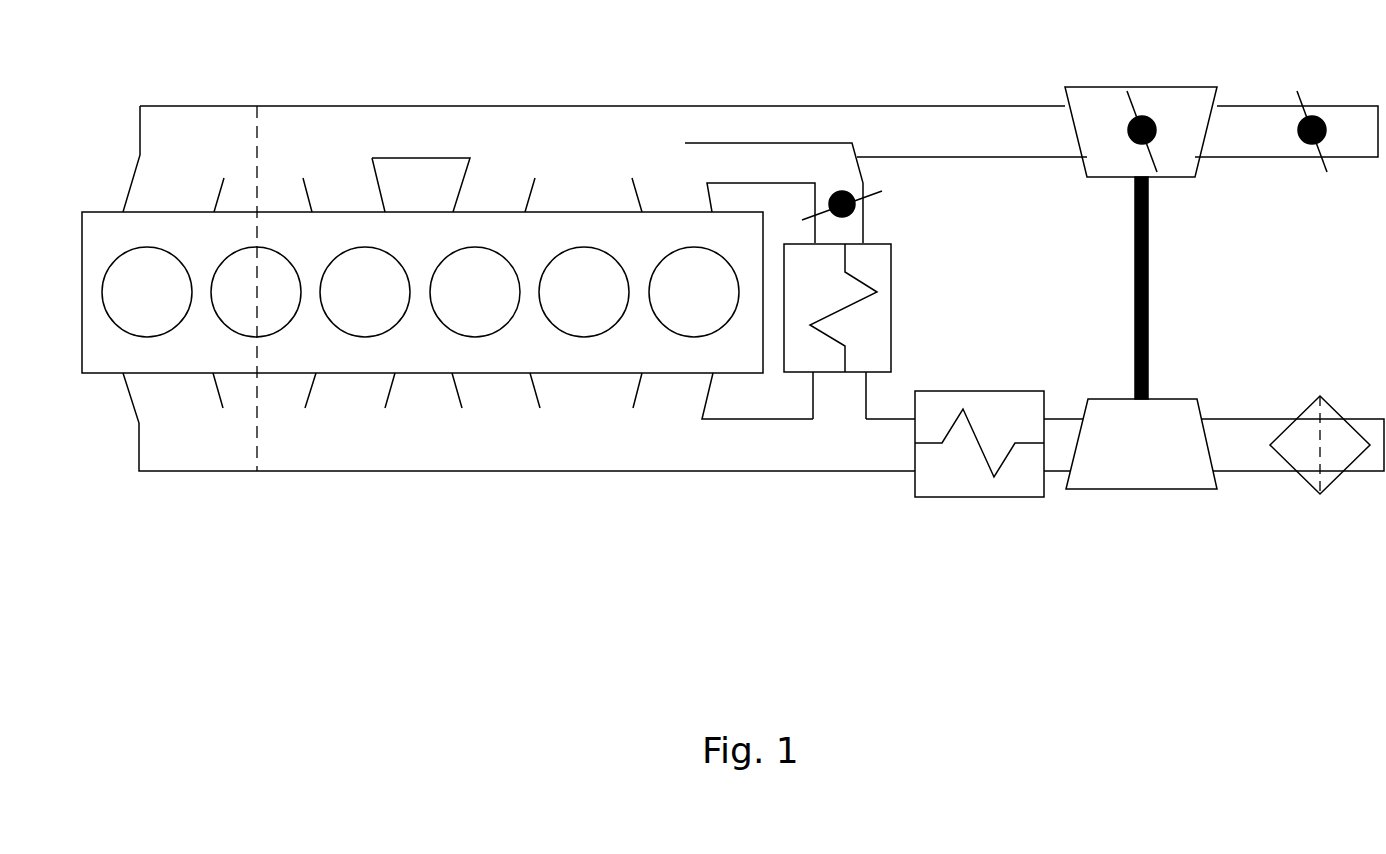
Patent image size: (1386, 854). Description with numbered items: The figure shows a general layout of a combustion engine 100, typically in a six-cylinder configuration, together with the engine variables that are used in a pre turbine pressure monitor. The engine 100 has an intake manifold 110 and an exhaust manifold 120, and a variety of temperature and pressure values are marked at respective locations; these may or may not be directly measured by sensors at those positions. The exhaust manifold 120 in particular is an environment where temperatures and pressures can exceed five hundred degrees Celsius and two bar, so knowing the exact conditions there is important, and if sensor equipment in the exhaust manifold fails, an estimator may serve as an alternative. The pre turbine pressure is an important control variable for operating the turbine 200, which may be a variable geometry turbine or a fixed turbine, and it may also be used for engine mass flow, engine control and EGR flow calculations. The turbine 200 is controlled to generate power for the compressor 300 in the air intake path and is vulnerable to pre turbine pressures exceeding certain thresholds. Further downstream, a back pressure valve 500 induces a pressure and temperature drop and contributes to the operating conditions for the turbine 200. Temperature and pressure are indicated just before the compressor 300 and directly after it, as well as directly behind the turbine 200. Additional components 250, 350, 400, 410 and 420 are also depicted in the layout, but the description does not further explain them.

The combustion engine 100 is at (422, 288).
The intake manifold 110 is at (402, 455).
The exhaust manifold 120 is at (348, 122).
The turbine 200 is at (1112, 127).
The turbocharger shaft 250 is at (1135, 312).
The compressor 300 is at (1092, 472).
The intercooler 350 is at (900, 455).
The EGR line 400 is at (843, 413).
The EGR valve 410 is at (840, 232).
The EGR cooler 420 is at (843, 388).
The back pressure valve 500 is at (1343, 133).